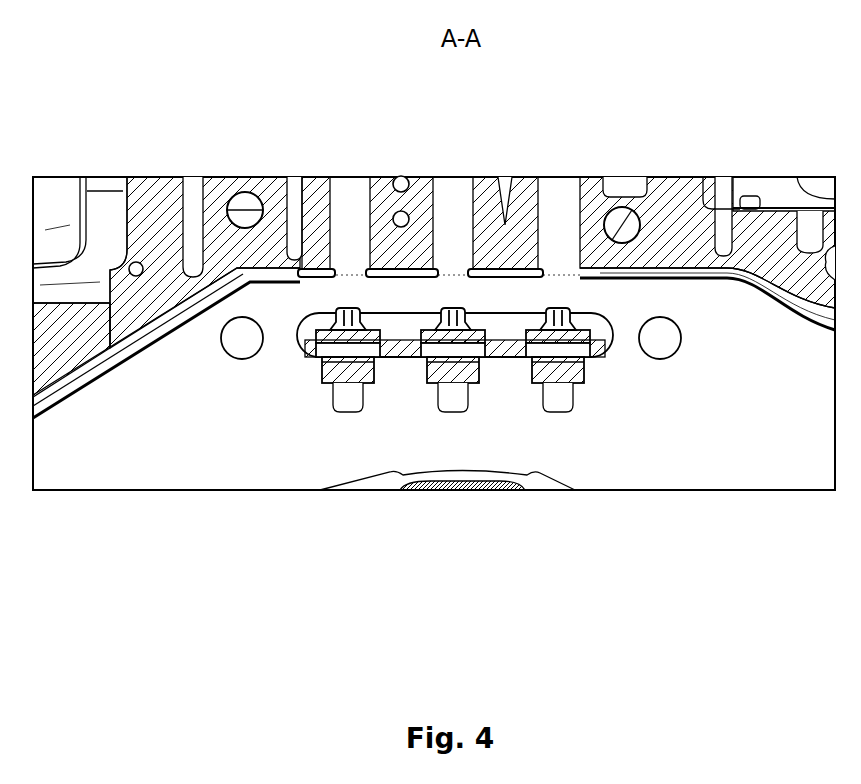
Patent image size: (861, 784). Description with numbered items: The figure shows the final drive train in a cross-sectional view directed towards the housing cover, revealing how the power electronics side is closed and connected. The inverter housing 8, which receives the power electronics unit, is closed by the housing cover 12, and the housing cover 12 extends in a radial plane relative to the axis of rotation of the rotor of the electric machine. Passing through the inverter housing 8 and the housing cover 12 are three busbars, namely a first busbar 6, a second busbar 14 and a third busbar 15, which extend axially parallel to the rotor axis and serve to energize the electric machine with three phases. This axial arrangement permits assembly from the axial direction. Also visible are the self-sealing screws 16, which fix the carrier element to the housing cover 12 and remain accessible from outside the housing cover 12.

The first busbar 6 is at (558, 338).
The inverter housing 8 is at (158, 200).
The housing cover 12 is at (213, 458).
The second busbar 14 is at (453, 338).
The third busbar 15 is at (348, 338).
The self-sealing screws 16 is at (240, 345).